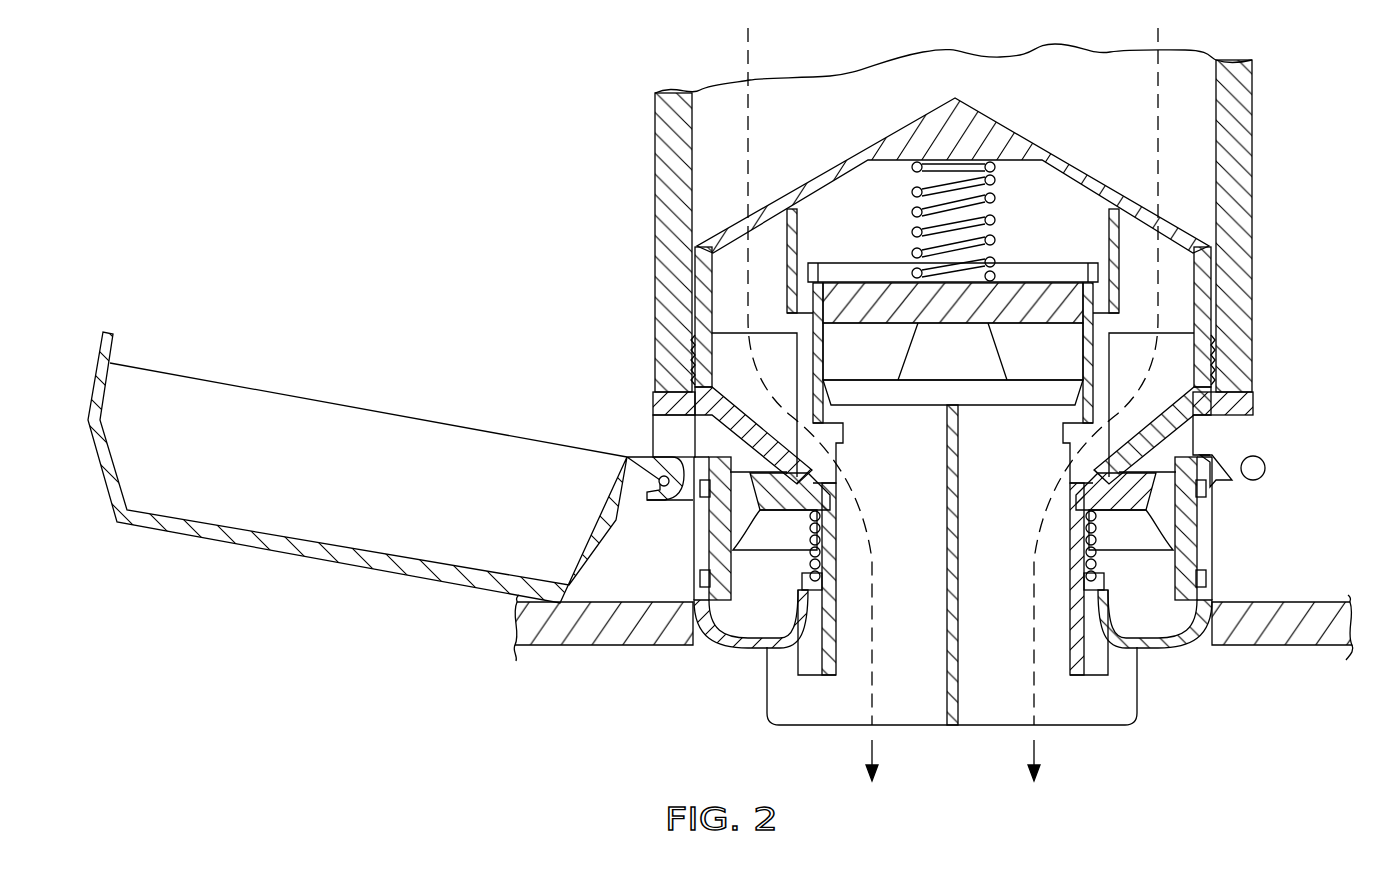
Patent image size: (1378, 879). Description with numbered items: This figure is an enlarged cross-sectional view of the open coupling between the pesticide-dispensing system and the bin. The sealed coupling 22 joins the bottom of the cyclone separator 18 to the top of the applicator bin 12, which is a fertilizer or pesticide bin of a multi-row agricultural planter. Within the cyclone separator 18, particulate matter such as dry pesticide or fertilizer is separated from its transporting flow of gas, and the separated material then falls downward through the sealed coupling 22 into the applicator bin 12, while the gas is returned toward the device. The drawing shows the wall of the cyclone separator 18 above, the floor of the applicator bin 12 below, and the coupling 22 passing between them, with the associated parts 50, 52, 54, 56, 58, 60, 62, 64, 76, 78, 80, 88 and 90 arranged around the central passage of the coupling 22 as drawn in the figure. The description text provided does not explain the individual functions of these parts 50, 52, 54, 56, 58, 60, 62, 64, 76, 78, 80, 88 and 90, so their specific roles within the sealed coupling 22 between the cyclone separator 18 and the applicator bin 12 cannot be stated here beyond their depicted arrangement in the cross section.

The applicator bin 12 is at (1318, 600).
The cyclone separator 18 is at (1253, 127).
The sealed coupling 22 is at (532, 118).
The cap / bonnet 50 is at (1262, 297).
The valve body base 52 is at (1212, 520).
The lid 54 is at (97, 368).
The flange 56 is at (705, 443).
The diaphragm seal 58 is at (730, 590).
The spring 60 is at (1000, 242).
The spring retainer plate 62 is at (868, 262).
The threaded connection 64 is at (740, 346).
The threads 76 is at (1229, 352).
The guide wedge 78 is at (757, 525).
The inner sleeve 80 is at (813, 592).
The poppet valve 88 is at (863, 407).
The ball detents 90 is at (810, 556).